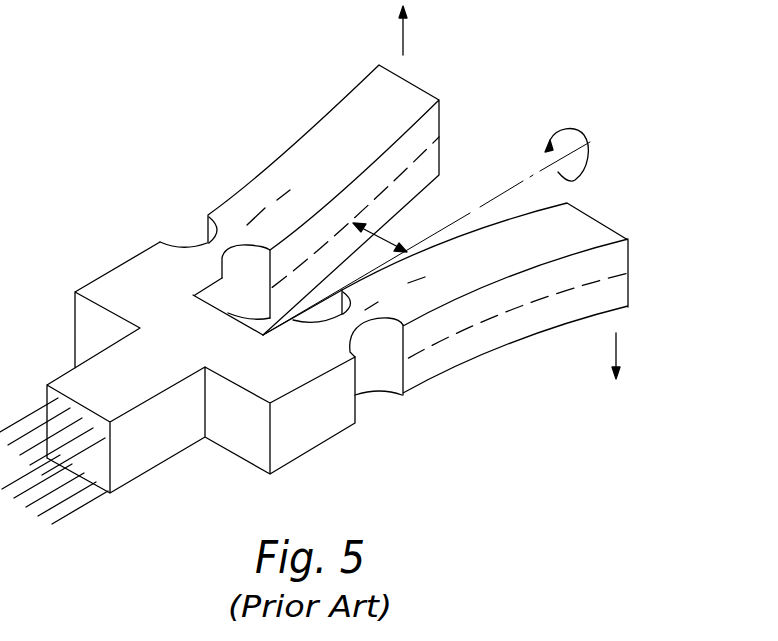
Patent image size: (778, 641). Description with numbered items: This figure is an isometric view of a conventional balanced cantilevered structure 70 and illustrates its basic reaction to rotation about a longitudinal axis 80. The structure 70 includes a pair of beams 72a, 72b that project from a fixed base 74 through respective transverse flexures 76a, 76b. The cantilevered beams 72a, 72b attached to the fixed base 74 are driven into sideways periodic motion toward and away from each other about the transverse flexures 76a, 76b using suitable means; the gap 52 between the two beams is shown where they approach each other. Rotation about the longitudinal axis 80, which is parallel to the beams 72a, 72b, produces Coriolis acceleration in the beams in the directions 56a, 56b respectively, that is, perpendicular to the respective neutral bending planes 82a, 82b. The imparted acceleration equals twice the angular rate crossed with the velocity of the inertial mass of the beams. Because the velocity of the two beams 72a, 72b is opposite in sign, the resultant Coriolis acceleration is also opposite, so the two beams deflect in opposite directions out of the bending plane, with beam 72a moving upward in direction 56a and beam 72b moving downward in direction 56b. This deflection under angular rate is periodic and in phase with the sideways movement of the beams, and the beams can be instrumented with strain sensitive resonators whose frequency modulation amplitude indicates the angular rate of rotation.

The cantilevered structure 70 is at (133, 129).
The fixed base 74 is at (150, 447).
The beam 72a is at (407, 105).
The beam 72b is at (598, 236).
The transverse flexure 76a is at (207, 245).
The transverse flexure 76b is at (378, 363).
The neutral bending plane 82a is at (373, 203).
The neutral bending plane 82b is at (482, 318).
The gap between arms 52 is at (378, 233).
The direction 56a is at (403, 37).
The direction 56b is at (616, 348).
The longitudinal axis 80 is at (577, 130).